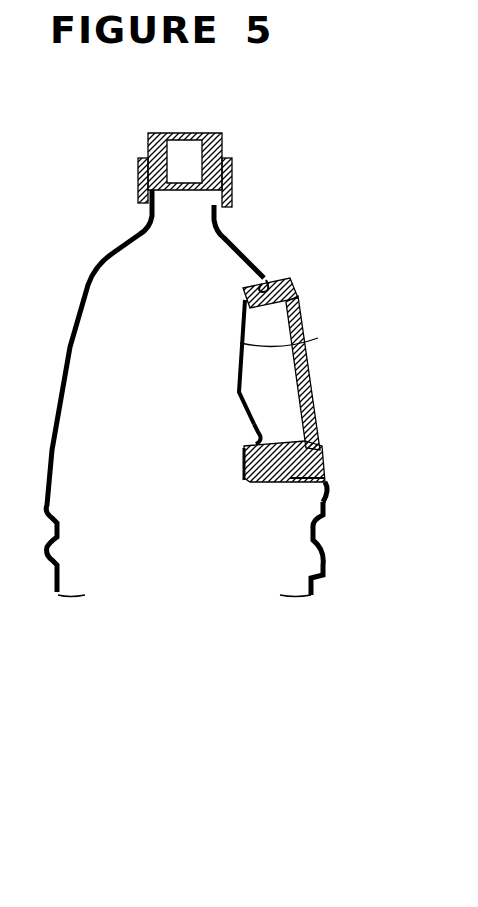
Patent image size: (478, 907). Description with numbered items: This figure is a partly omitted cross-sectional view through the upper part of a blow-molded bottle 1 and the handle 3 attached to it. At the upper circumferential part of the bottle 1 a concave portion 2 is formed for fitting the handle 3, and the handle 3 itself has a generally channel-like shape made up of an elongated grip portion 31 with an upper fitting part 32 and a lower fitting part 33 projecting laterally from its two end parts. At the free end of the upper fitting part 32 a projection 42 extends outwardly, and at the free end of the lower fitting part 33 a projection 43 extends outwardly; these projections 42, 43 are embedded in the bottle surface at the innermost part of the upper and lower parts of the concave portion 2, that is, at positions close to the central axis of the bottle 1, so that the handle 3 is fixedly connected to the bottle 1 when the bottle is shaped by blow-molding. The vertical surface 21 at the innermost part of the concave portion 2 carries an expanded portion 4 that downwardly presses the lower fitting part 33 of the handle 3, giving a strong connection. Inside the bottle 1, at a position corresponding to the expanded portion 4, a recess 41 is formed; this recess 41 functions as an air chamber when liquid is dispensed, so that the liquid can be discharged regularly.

The bottle 1 is at (79, 289).
The concave portion 2 is at (268, 385).
The handle 3 is at (326, 424).
The expanded portion 4 is at (306, 459).
The vertical surface 21 is at (304, 337).
The grip portion 31 is at (321, 471).
The upper fitting part 32 is at (276, 292).
The lower fitting part 33 is at (326, 491).
The recess 41 is at (258, 440).
The projection 42 is at (264, 287).
The projection 43 is at (256, 476).